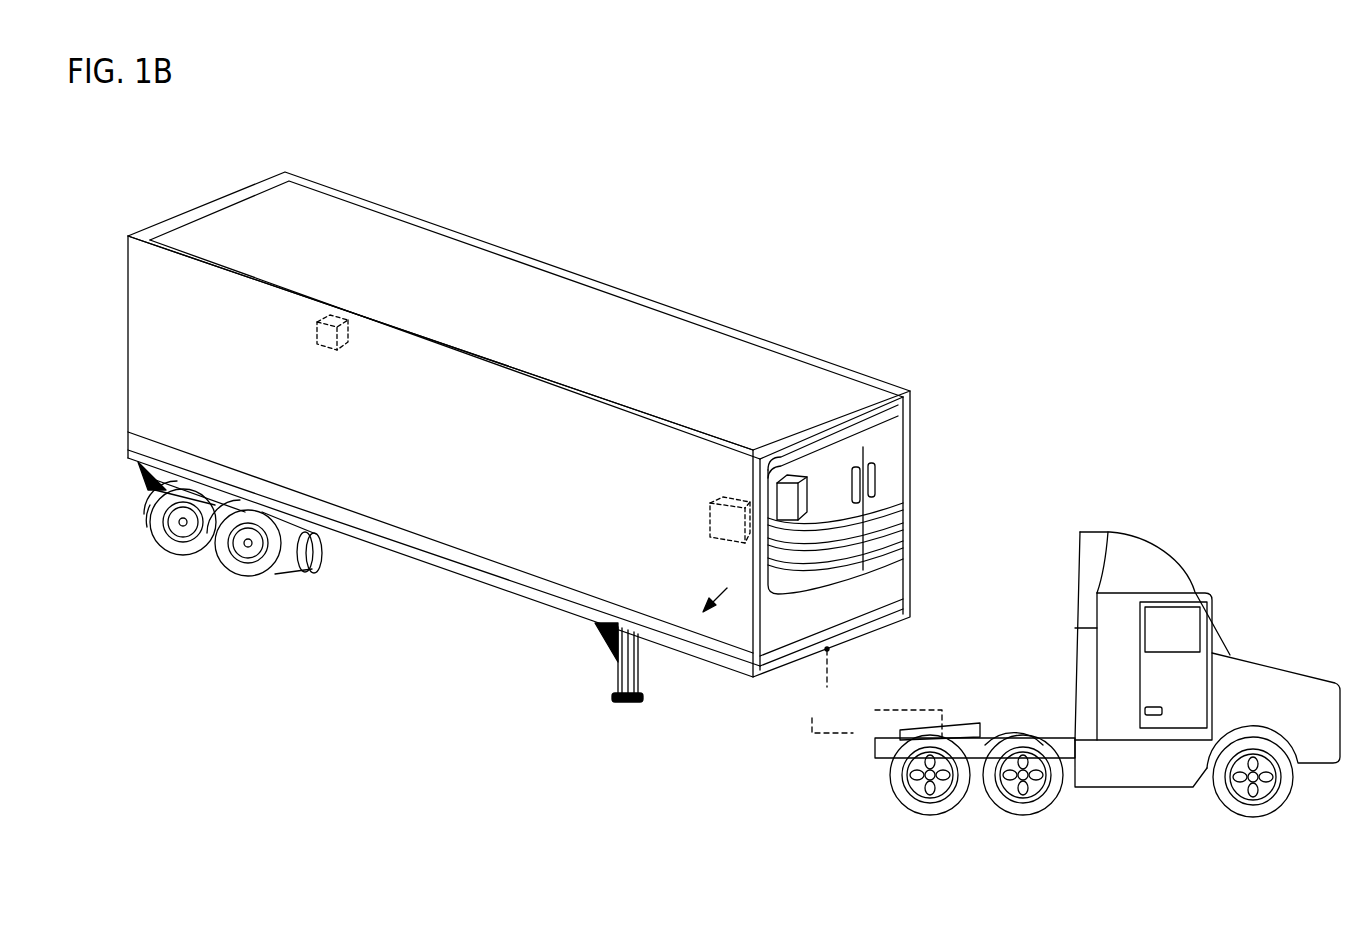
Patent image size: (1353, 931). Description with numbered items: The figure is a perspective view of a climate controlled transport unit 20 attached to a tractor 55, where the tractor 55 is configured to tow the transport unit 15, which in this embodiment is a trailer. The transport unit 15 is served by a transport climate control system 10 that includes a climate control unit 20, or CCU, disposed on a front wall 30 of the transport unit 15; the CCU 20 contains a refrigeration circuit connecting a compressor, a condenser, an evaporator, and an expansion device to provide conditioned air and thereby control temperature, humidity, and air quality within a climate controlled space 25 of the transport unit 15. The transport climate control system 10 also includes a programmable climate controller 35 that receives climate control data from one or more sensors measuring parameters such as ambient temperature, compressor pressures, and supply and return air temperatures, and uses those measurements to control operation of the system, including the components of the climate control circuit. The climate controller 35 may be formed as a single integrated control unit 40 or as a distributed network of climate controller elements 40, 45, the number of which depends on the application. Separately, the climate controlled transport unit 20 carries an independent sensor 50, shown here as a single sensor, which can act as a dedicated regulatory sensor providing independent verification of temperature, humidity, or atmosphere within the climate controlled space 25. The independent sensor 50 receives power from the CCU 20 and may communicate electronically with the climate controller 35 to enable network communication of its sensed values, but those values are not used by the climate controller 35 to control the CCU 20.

The transport climate control system 10 is at (963, 274).
The transport unit 15 is at (657, 300).
The climate control unit 20 is at (546, 226).
The climate controlled space 25 is at (520, 508).
The front wall 30 is at (912, 393).
The climate controller 35 is at (710, 520).
The integrated control unit 40 is at (800, 522).
The climate controller element 45 is at (592, 645).
The independent sensor 50 is at (327, 347).
The tractor 55 is at (1263, 663).